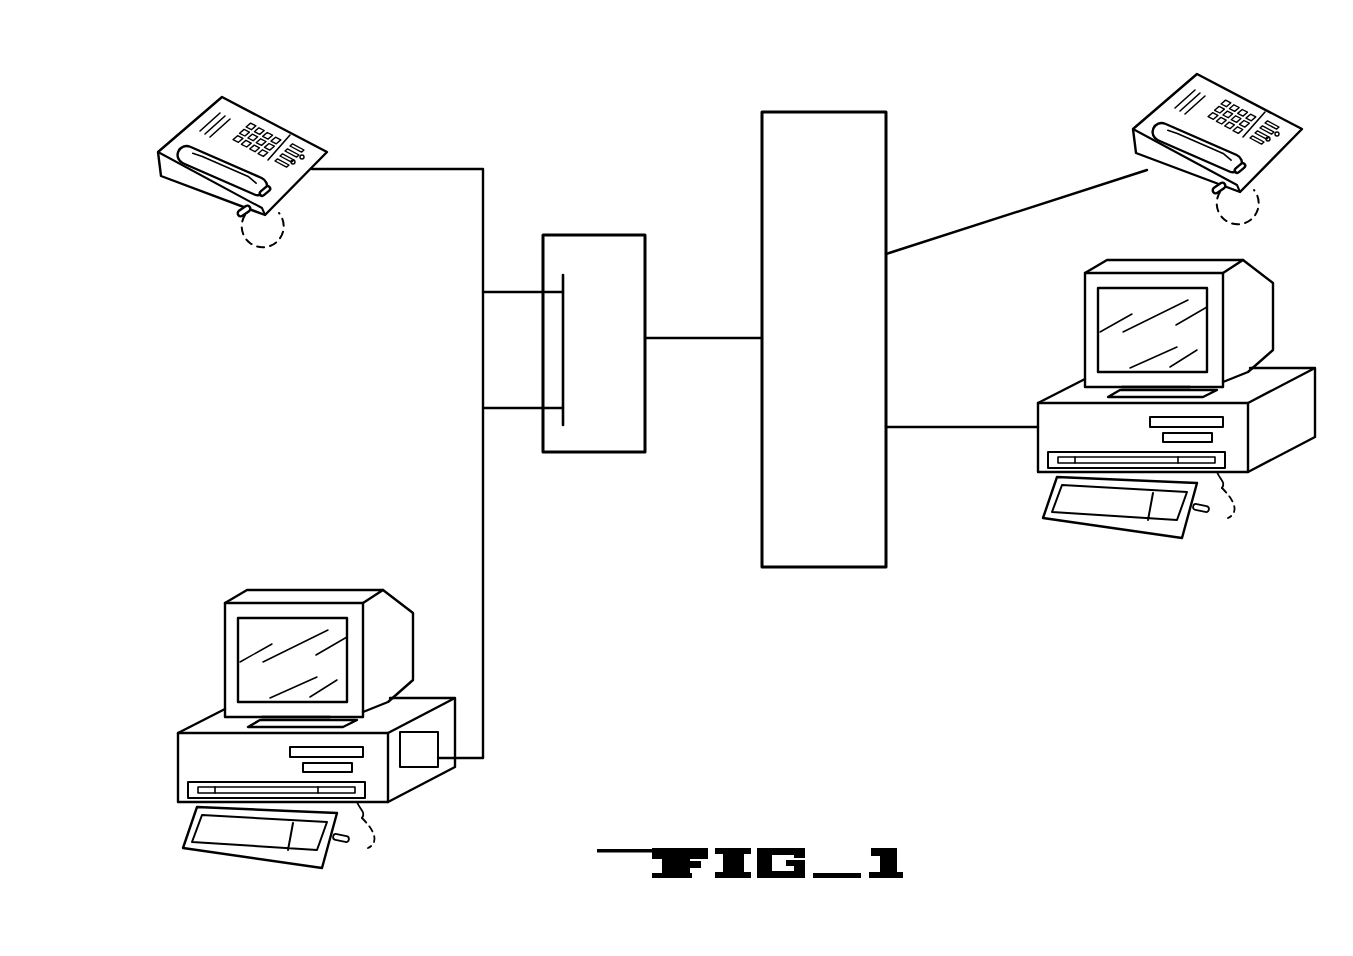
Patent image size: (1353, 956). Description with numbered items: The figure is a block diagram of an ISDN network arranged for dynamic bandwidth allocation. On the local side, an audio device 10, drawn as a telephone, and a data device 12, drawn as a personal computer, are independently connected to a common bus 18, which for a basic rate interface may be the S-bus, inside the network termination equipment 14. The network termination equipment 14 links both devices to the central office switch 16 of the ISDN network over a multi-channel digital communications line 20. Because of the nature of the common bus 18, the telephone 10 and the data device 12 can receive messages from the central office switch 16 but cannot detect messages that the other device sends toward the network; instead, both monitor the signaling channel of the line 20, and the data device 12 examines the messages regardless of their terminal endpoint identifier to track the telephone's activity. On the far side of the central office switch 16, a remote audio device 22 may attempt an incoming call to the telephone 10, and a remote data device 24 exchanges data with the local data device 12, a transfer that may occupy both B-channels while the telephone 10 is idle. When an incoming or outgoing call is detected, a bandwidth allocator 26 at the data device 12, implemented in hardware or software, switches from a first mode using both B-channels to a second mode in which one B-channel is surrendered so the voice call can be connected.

The audio device 10 is at (223, 196).
The data device 12 is at (208, 725).
The network termination equipment 14 is at (597, 453).
The central office switch 16 is at (793, 570).
The common bus 18 is at (563, 378).
The multi-channel digital communications line 20 is at (700, 333).
The remote audio device 22 is at (1282, 110).
The remote data device 24 is at (1287, 450).
The bandwidth allocator 26 is at (418, 765).